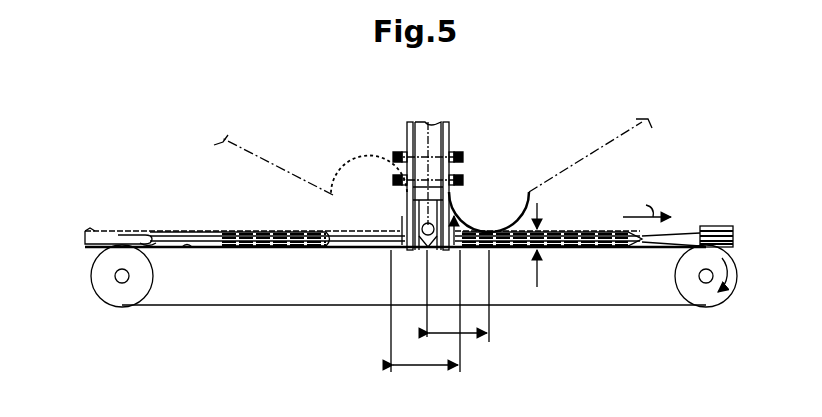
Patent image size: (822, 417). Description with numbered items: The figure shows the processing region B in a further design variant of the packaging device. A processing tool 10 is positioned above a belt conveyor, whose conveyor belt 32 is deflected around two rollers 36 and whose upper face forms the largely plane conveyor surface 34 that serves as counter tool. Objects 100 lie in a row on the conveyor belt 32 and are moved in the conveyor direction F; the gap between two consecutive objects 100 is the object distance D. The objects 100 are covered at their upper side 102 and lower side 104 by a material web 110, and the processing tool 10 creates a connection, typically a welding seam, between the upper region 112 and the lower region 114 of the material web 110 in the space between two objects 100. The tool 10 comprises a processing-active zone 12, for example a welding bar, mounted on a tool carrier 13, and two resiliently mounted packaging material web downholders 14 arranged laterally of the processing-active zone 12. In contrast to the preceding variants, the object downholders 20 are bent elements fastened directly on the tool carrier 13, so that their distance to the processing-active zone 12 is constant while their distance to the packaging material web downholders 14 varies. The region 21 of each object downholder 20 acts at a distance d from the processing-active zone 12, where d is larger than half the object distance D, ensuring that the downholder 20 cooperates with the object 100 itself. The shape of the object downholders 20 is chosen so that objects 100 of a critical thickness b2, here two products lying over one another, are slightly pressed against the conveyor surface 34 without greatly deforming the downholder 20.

The processing tool 10 is at (400, 161).
The processing-active zone 12 is at (424, 257).
The tool carrier 13 is at (431, 128).
The packaging material web downholder 14 is at (393, 255).
The object downholder 20 is at (523, 204).
The object downholder region 21 is at (310, 165).
The conveyor belt 32 is at (153, 305).
The conveyor surface 34 is at (660, 244).
The roller 36 is at (120, 293).
The object 100 is at (173, 231).
The upper side of object 102 is at (143, 238).
The lower side of object 104 is at (88, 237).
The material web 110 is at (148, 236).
The upper region of material web 112 is at (152, 224).
The lower region of material web 114 is at (187, 247).
The processing region B is at (410, 262).
The object distance D is at (425, 354).
The distance of object downholder to processing-active zone d is at (458, 323).
The critical thickness b2 is at (550, 247).
The conveyor direction F is at (647, 208).